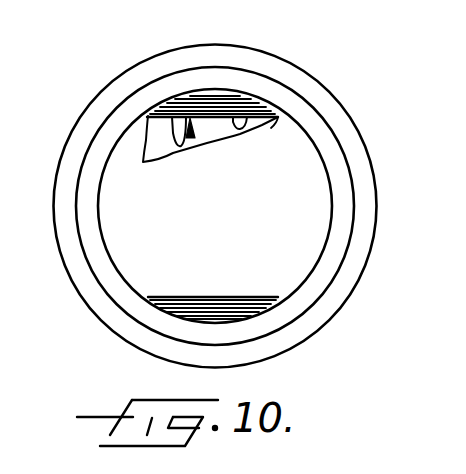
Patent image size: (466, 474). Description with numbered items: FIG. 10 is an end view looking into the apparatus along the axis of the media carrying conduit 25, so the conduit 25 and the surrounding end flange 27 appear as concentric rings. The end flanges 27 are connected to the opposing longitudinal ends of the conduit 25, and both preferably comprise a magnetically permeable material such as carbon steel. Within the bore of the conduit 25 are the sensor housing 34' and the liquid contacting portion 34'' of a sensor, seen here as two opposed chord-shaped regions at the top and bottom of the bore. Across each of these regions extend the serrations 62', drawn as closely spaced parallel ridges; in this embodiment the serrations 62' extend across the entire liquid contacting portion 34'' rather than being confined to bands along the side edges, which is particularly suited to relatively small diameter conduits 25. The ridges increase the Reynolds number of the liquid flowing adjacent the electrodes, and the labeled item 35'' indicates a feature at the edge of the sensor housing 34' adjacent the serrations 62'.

The end flange 27 is at (347, 130).
The conduit 25 is at (302, 117).
The sensor housing 34' is at (212, 75).
The liquid contacting portion 34'' is at (213, 251).
The filter media fold 35'' is at (213, 205).
The serrations 62' is at (286, 161).